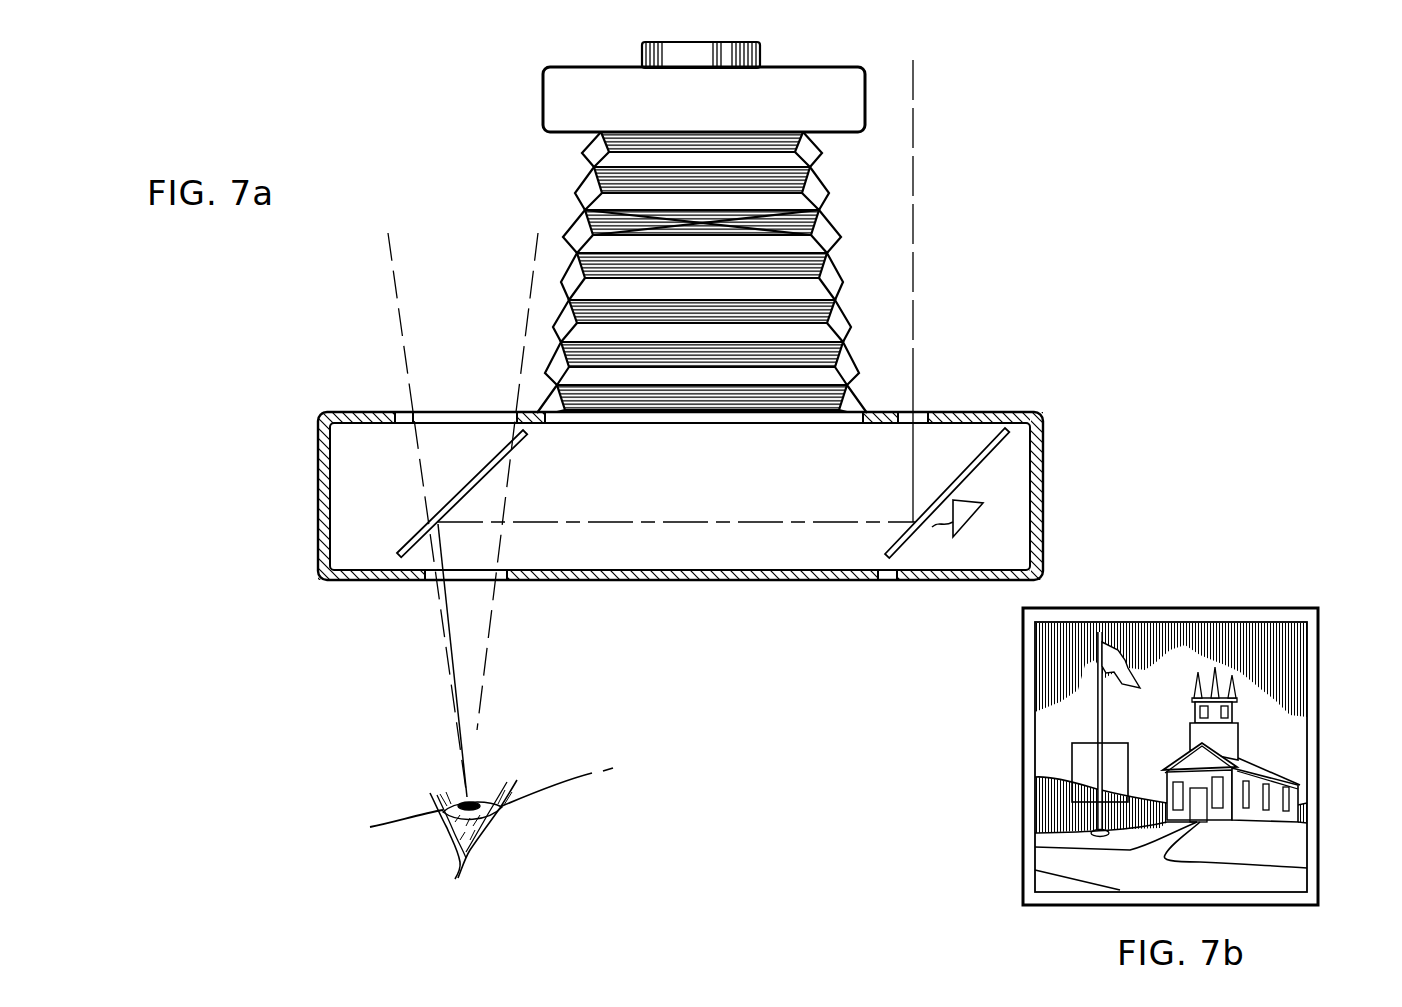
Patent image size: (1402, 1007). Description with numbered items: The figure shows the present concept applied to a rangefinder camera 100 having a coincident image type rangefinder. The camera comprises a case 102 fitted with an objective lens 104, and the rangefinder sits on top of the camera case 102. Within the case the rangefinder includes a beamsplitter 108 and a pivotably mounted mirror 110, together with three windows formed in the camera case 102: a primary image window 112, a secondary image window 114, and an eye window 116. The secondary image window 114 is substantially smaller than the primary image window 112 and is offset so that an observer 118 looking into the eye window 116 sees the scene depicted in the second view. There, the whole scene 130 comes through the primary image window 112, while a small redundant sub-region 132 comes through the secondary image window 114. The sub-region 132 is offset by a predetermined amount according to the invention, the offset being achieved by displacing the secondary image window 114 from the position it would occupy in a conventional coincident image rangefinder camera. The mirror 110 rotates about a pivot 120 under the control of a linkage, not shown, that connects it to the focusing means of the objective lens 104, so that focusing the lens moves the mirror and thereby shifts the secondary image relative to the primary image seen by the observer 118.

In FIG. 7a, the rangefinder camera 100 is at (814, 604).
In FIG. 7a, the case 102 is at (692, 582).
In FIG. 7a, the objective lens 104 is at (763, 57).
In FIG. 7a, the beamsplitter 108 is at (518, 440).
In FIG. 7a, the pivotably mounted mirror 110 is at (948, 488).
In FIG. 7a, the primary image window 112 is at (417, 410).
In FIG. 7a, the secondary image window 114 is at (916, 411).
In FIG. 7a, the eye window 116 is at (432, 581).
In FIG. 7a, the observer 118 is at (508, 784).
In FIG. 7a, the pivot 120 is at (879, 581).
In FIG. 7b, the whole scene 130 is at (1178, 756).
In FIG. 7b, the sub-region 132 is at (1090, 742).